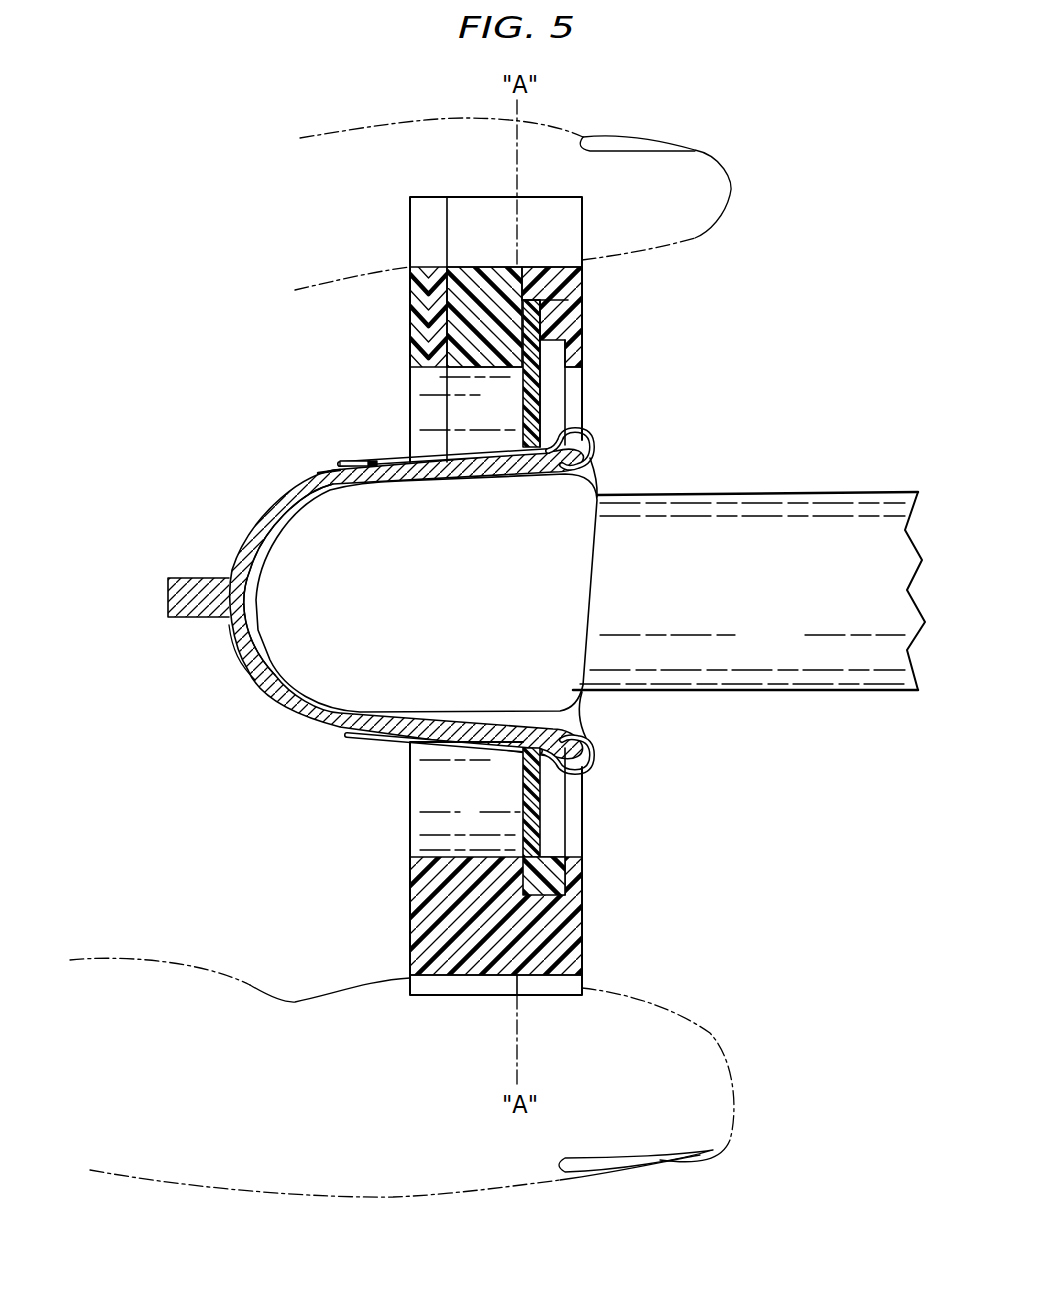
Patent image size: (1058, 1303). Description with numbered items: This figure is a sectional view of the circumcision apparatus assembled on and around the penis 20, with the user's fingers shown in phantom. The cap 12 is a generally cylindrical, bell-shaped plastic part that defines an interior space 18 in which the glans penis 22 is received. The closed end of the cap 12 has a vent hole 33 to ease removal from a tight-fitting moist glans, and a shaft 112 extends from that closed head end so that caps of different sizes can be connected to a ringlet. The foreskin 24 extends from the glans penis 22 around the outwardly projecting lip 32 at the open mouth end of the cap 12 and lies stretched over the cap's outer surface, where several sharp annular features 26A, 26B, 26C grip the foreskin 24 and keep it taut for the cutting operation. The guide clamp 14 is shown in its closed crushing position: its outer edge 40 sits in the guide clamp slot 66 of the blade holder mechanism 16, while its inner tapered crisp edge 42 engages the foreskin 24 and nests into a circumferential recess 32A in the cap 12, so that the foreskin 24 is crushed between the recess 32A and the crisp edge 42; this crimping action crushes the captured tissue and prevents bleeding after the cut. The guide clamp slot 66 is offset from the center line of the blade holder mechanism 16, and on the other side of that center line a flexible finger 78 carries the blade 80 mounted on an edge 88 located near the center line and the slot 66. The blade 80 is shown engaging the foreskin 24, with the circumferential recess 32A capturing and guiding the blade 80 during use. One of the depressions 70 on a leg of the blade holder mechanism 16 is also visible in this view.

The cap 12 is at (283, 708).
The guide clamp 14 is at (548, 858).
The blade holder mechanism 16 is at (580, 910).
The interior space 18 is at (272, 540).
The penis 20 is at (790, 497).
The glans penis 22 is at (426, 606).
The foreskin 24 is at (365, 740).
The annular crisp feature 26A is at (323, 472).
The annular crisp feature 26B is at (357, 463).
The annular crisp feature 26C is at (373, 461).
The lip 32 is at (597, 443).
The circumferential recess 32A is at (540, 442).
The vent hole 33 is at (240, 652).
The outer edge 40 is at (567, 882).
The inner tapered crisp edge 42 is at (562, 412).
The guide clamp slot 66 is at (583, 327).
The depression 70 is at (420, 230).
The flexible finger 78 is at (481, 207).
The blade 80 is at (537, 393).
The edge 88 is at (509, 265).
The shaft 112 is at (205, 580).